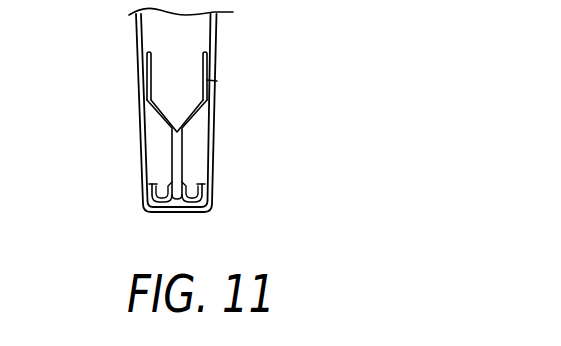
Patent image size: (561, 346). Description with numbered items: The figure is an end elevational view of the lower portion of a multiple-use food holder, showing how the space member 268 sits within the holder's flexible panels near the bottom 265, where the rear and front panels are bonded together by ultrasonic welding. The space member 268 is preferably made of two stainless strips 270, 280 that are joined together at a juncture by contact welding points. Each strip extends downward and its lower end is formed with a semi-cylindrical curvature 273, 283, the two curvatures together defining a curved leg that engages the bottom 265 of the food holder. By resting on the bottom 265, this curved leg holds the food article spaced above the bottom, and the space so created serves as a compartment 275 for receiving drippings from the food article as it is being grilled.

The space member 268 is at (168, 88).
The stainless strip 270 is at (139, 91).
The stainless strip 280 is at (208, 80).
The compartment 275 is at (197, 157).
The semi-cylindrical curvature 273 is at (150, 184).
The semi-cylindrical curvature 283 is at (202, 183).
The bottom 265 is at (176, 212).